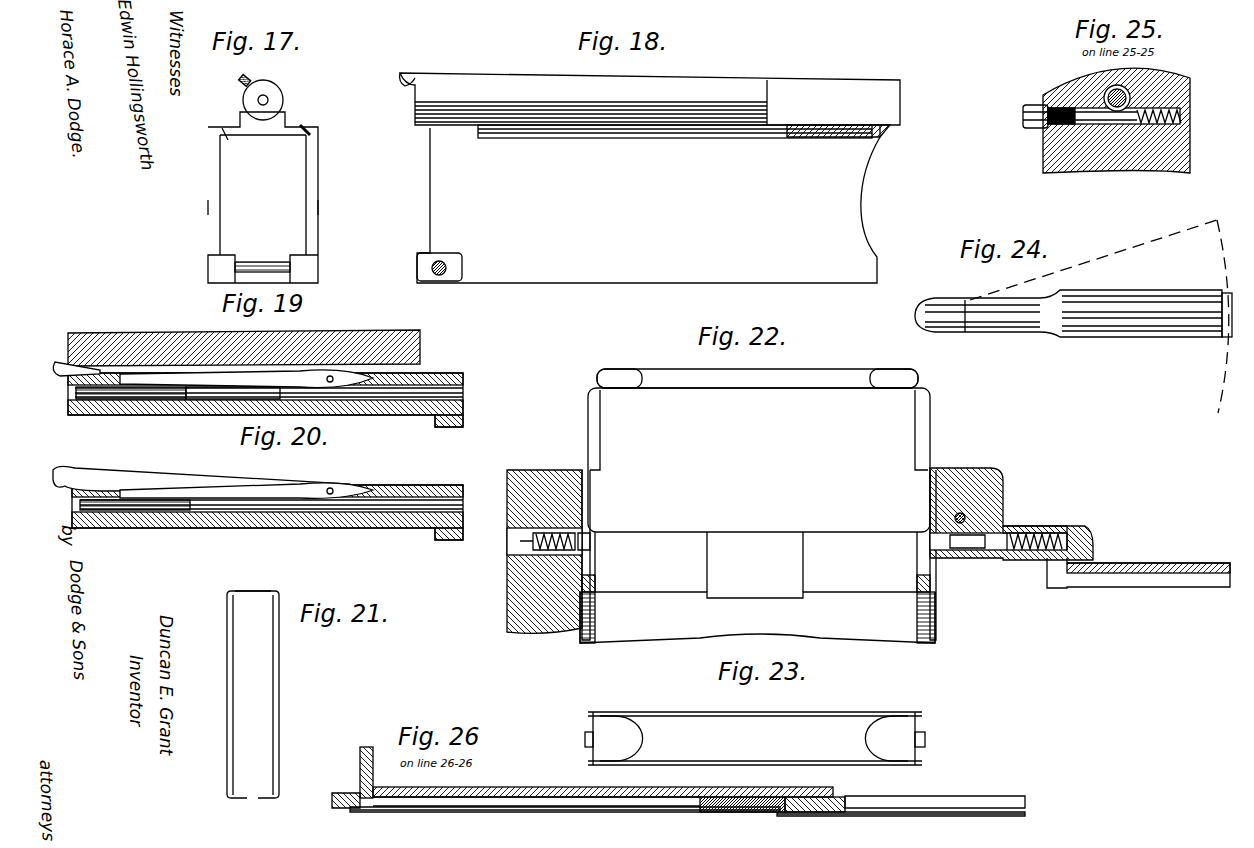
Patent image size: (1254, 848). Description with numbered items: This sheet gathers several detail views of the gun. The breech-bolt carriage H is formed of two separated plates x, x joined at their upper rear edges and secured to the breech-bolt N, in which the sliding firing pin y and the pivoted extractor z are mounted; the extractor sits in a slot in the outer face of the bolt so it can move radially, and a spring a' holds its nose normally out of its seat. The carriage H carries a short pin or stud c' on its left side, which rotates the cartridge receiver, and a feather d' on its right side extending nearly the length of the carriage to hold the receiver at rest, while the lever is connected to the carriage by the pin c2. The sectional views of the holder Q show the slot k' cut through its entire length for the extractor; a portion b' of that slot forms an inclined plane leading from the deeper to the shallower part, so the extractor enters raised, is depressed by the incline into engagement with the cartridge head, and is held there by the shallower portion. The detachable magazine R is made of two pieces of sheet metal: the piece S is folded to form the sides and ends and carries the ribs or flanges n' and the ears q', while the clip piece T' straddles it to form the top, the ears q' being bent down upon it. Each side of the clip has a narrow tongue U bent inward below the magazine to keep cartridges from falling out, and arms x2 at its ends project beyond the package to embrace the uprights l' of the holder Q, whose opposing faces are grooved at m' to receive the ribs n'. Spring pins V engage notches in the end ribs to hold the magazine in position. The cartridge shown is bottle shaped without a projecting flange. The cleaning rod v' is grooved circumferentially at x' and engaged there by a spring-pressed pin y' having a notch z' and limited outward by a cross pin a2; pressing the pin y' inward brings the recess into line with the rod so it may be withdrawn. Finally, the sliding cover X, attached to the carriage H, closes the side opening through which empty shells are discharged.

In FIG. 17, the breech-bolt carriage H is at (263, 197).
In FIG. 18, the breech-bolt carriage H is at (653, 204).
In FIG. 26, the breech-bolt carriage H is at (588, 779).
In FIG. 17, the breech-bolt N is at (283, 94).
In FIG. 18, the breech-bolt N is at (650, 99).
In FIG. 19, the breech-bolt N is at (265, 404).
In FIG. 20, the breech-bolt N is at (267, 512).
In FIG. 17, the firing pin y is at (240, 97).
In FIG. 19, the firing pin y is at (131, 411).
In FIG. 20, the firing pin y is at (135, 523).
In FIG. 17, the extractor z is at (234, 71).
In FIG. 18, the extractor z is at (417, 68).
In FIG. 19, the extractor z is at (71, 363).
In FIG. 20, the extractor z is at (201, 468).
In FIG. 17, the pin or stud c' is at (318, 118).
In FIG. 17, the feather d' is at (235, 142).
In FIG. 18, the feather d' is at (675, 142).
In FIG. 17, the plates x is at (262, 206).
In FIG. 18, the plates x is at (585, 204).
In FIG. 26, the plates x is at (536, 787).
In FIG. 17, the pin c2 is at (268, 258).
In FIG. 18, the pin c2 is at (444, 262).
In FIG. 19, the slot k' is at (250, 340).
In FIG. 19, the inclined plane b' is at (260, 348).
In FIG. 19, the spring a' is at (233, 411).
In FIG. 20, the spring a' is at (246, 471).
In FIG. 21, the ears q' is at (253, 577).
In FIG. 22, the ears q' is at (757, 368).
In FIG. 23, the ears q' is at (754, 738).
In FIG. 21, the clip piece T' is at (205, 676).
In FIG. 22, the clip piece T' is at (827, 468).
In FIG. 23, the clip piece T' is at (755, 738).
In FIG. 21, the folded sheet-metal piece S is at (270, 688).
In FIG. 22, the folded sheet-metal piece S is at (756, 565).
In FIG. 23, the folded sheet-metal piece S is at (757, 733).
In FIG. 21, the detachable magazine R is at (304, 676).
In FIG. 22, the detachable magazine R is at (759, 460).
In FIG. 21, the tongue U is at (254, 793).
In FIG. 22, the tongue U is at (755, 562).
In FIG. 22, the ribs or flanges n' is at (758, 530).
In FIG. 23, the ribs or flanges n' is at (761, 750).
In FIG. 22, the uprights l' is at (800, 543).
In FIG. 22, the arms or projections x2 is at (592, 502).
In FIG. 23, the arms or projections x2 is at (592, 710).
In FIG. 22, the spring pins V is at (585, 545).
In FIG. 22, the grooves m' is at (783, 586).
In FIG. 22, the holder Q is at (767, 617).
In FIG. 25, the circumferential groove x' is at (1122, 113).
In FIG. 25, the cross pin a2 is at (1048, 94).
In FIG. 25, the spring-pressed pin y' is at (1025, 124).
In FIG. 25, the cleaning rod v' is at (1089, 80).
In FIG. 25, the notch or recess z' is at (1108, 138).
In FIG. 26, the sliding cover X is at (553, 812).